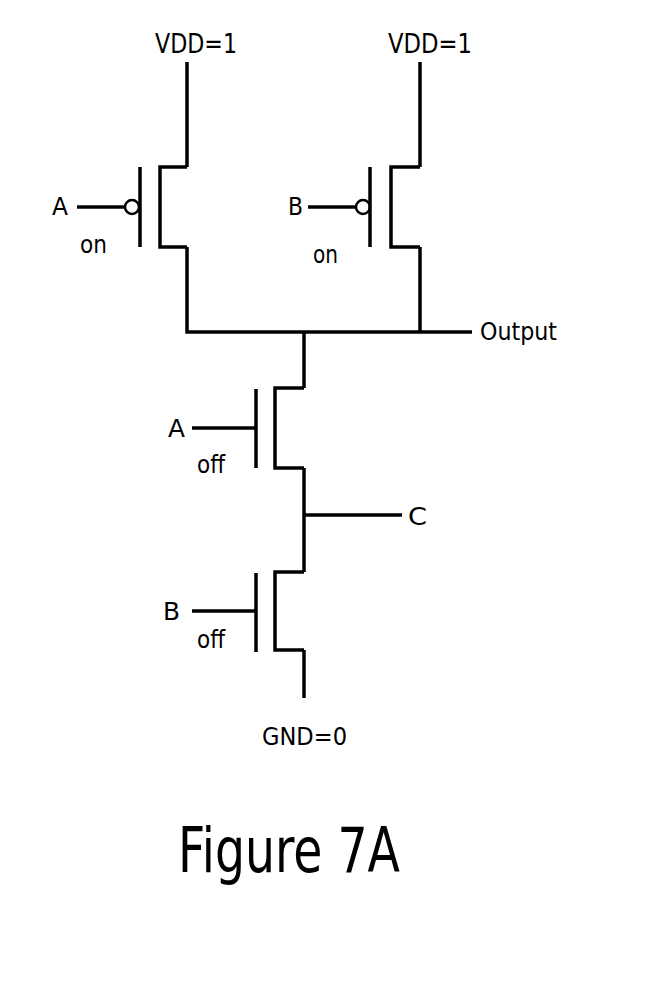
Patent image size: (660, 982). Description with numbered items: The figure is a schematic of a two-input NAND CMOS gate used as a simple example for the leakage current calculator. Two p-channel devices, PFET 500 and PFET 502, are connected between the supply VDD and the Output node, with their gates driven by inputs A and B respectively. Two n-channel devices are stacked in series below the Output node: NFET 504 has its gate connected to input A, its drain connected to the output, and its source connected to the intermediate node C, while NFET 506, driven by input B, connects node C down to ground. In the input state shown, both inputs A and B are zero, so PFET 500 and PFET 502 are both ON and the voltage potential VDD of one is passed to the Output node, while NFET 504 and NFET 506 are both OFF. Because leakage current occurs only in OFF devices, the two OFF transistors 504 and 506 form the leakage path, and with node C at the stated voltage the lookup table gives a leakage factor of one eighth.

The PFET 500 is at (162, 232).
The PFET 502 is at (393, 233).
The NFET 504 is at (276, 452).
The NFET 506 is at (277, 635).